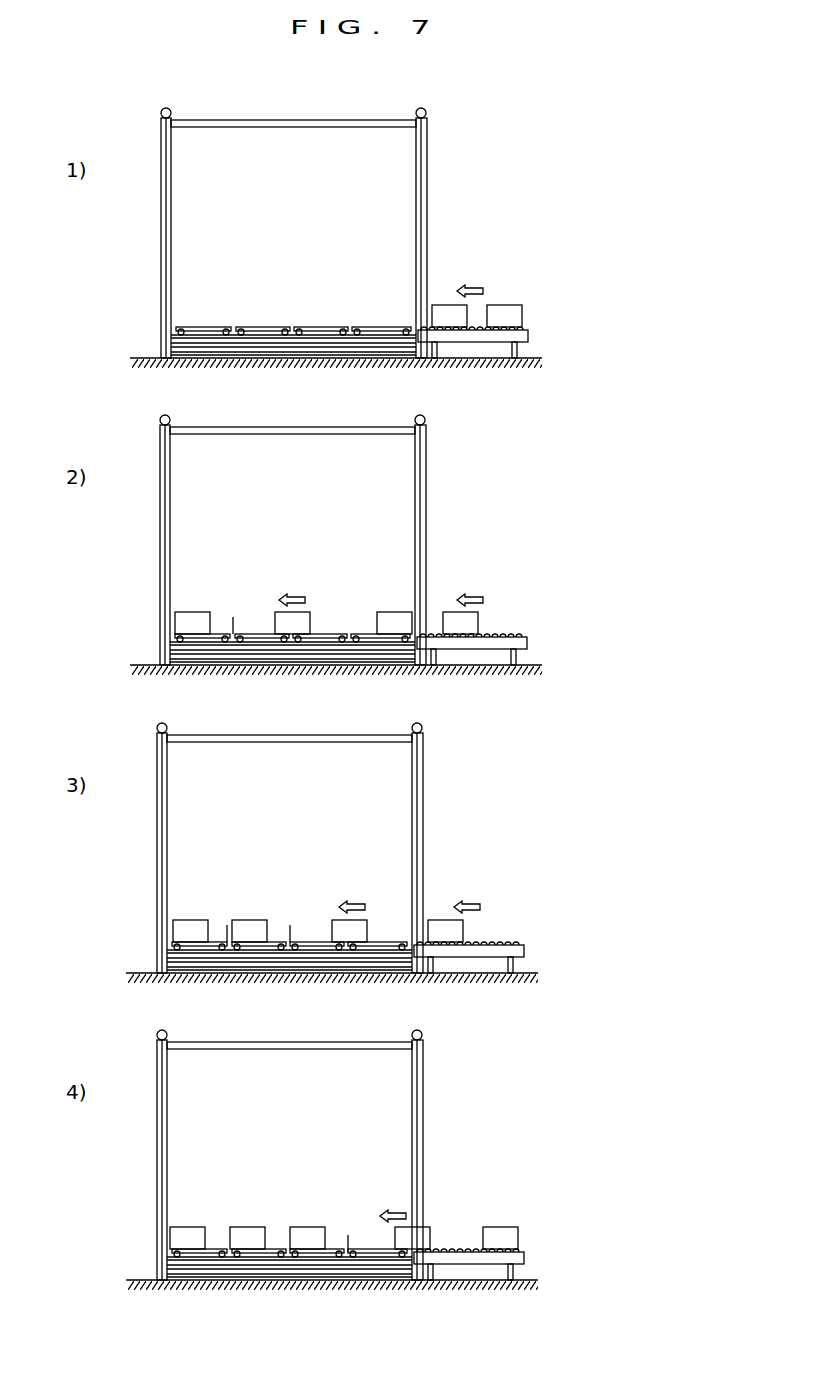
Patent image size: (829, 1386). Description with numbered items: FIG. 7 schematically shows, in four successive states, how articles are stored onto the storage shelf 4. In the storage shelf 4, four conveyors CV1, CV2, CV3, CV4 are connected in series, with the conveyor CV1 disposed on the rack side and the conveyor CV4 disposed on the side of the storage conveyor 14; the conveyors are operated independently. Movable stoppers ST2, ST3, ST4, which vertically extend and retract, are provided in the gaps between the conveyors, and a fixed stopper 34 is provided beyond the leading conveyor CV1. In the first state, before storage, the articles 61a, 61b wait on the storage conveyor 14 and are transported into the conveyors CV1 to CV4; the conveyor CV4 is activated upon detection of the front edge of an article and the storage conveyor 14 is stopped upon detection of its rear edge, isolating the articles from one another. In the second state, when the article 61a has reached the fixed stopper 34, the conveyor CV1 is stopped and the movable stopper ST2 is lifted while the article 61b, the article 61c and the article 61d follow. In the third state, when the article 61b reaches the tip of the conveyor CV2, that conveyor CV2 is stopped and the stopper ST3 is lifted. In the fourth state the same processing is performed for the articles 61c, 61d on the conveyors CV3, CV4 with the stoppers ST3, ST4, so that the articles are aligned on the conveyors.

The storage shelf 4 is at (448, 196).
The storage conveyor 14 is at (483, 345).
The fixed stopper 34 is at (176, 320).
The article 61a is at (444, 310).
The article 61b is at (504, 310).
The article 61c is at (393, 618).
The article 61d is at (475, 622).
The movable stopper ST2 is at (233, 326).
The movable stopper ST3 is at (292, 326).
The movable stopper ST4 is at (351, 326).
The conveyor CV1 is at (202, 313).
The conveyor CV2 is at (262, 313).
The conveyor CV3 is at (322, 313).
The conveyor CV4 is at (383, 313).